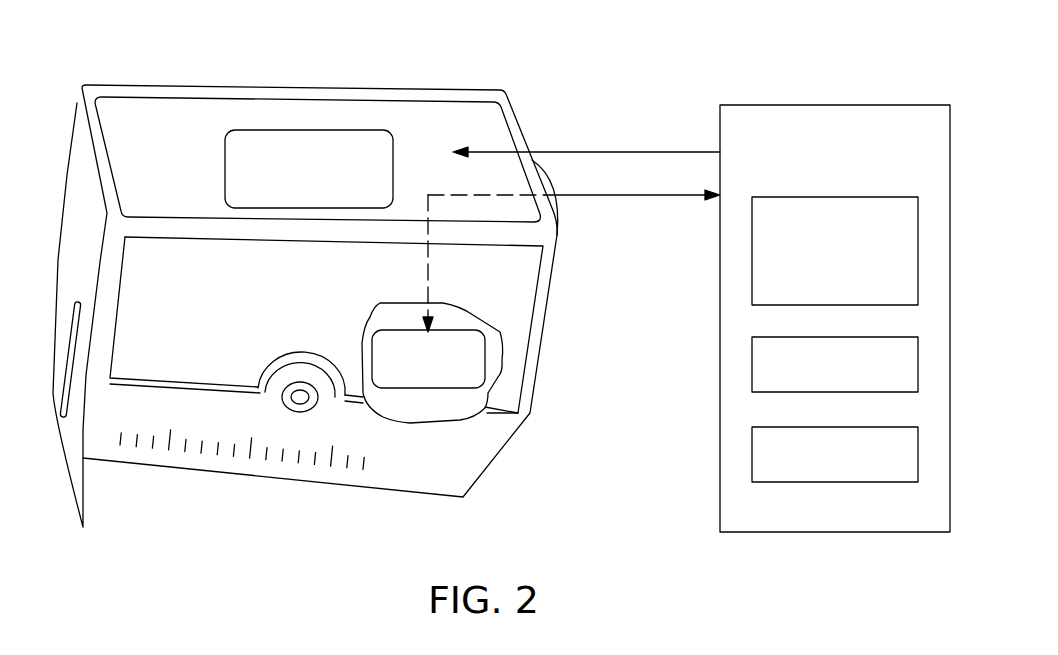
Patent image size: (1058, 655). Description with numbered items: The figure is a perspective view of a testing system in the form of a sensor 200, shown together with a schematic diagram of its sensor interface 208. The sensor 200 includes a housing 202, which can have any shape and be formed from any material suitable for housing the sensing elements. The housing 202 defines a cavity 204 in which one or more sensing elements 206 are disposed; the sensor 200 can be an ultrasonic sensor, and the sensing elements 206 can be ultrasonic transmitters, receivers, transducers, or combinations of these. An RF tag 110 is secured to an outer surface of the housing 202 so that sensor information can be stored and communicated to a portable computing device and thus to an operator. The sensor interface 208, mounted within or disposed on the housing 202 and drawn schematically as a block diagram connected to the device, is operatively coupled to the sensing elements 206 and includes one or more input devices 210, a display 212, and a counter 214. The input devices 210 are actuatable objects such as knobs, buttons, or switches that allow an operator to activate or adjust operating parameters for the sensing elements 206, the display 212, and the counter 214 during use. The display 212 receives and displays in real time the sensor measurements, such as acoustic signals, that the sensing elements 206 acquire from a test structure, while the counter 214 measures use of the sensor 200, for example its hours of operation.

The RF tag 110 is at (288, 183).
The sensor 200 is at (770, 68).
The housing 202 is at (186, 373).
The cavity 204 is at (502, 357).
The sensing element 206 is at (407, 373).
The sensor interface 208 is at (720, 116).
The input devices 210 is at (752, 249).
The display 212 is at (752, 362).
The counter 214 is at (752, 452).